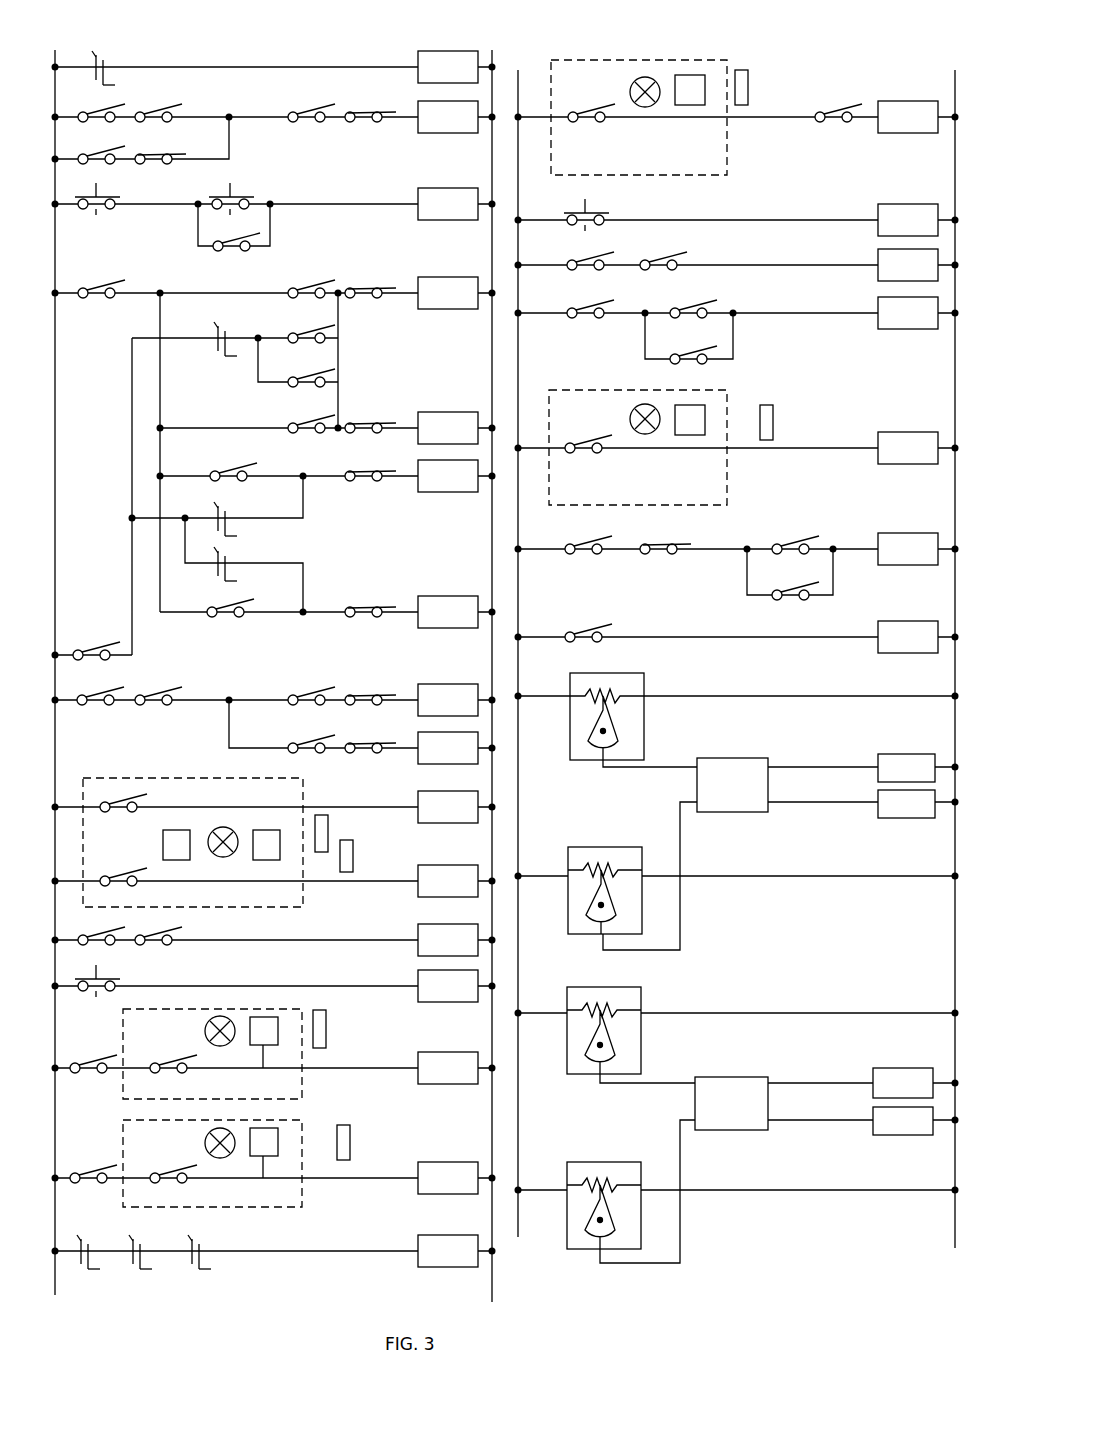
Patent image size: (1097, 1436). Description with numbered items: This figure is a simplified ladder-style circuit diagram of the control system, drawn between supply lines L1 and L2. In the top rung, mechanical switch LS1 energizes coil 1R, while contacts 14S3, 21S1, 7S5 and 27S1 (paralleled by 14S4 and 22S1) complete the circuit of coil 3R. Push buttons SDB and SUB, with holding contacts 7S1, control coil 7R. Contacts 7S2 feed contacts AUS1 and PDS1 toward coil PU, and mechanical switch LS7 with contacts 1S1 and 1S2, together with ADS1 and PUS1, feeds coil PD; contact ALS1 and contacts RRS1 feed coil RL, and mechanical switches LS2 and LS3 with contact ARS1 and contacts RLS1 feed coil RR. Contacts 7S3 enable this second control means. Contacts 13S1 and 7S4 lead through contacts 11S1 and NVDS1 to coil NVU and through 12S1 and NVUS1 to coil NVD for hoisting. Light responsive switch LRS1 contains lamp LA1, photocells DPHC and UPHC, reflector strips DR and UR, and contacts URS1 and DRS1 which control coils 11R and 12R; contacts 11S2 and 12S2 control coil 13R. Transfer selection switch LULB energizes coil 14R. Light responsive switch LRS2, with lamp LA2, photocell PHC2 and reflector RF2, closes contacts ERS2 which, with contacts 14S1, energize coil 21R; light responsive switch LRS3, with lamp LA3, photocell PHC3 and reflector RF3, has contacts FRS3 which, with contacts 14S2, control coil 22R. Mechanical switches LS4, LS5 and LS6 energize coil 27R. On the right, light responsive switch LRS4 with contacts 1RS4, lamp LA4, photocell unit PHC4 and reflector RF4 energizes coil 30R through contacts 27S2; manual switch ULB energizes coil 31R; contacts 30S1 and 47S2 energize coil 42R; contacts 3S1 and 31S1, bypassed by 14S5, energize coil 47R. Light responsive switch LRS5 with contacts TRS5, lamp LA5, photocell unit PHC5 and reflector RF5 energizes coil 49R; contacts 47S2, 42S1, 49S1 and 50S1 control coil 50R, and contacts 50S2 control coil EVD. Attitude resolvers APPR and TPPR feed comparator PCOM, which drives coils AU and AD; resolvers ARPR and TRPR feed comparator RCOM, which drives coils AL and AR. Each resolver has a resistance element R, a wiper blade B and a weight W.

The power supply line L1 is at (282, 660).
The power supply line L2 is at (717, 664).
The mechanical switch LS1 is at (103, 55).
The coil 1R is at (448, 67).
The contacts 14S3 is at (91, 104).
The contacts 21S1 is at (158, 98).
The contacts 7S5 is at (306, 98).
The contacts 27S1 is at (369, 98).
The coil 3R is at (448, 117).
The contacts 14S4 is at (91, 145).
The contacts 22S1 is at (160, 145).
The push button SUB is at (96, 186).
The push button SDB is at (212, 192).
The coil 7R is at (448, 204).
The contacts 7S1 is at (232, 254).
The contacts 7S2 is at (95, 277).
The contacts AUS1 is at (309, 275).
The contacts PDS1 is at (372, 275).
The coil PU is at (448, 293).
The mechanical switch LS7 is at (218, 328).
The contacts 1S1 is at (302, 323).
The contacts 1S2 is at (300, 366).
The contacts ADS1 is at (295, 412).
The contacts PUS1 is at (370, 409).
The coil PD is at (448, 428).
The contact ALS1 is at (216, 460).
The contacts RRS1 is at (360, 461).
The coil RL is at (448, 476).
The mechanical switch LS2 is at (216, 508).
The mechanical switch LS3 is at (226, 552).
The contact ARS1 is at (209, 596).
The contacts RLS1 is at (360, 596).
The coil RR is at (448, 612).
The contacts 7S3 is at (90, 641).
The contacts 13S1 is at (90, 686).
The contacts 7S4 is at (156, 684).
The contacts 11S1 is at (302, 684).
The contacts NVDS1 is at (367, 684).
The coil NVU is at (448, 700).
The contacts 12S1 is at (289, 733).
The contacts NVUS1 is at (367, 733).
The coil NVD is at (448, 748).
The light responsive switch LRS1 is at (228, 778).
The contacts URS1 is at (145, 794).
The coil 11R is at (448, 807).
The photocell DPHC is at (167, 834).
The lamp LA1 is at (213, 857).
The photocell UPHC is at (263, 834).
The reflector strip DR is at (328, 821).
The reflector strip UR is at (353, 858).
The contacts DRS1 is at (118, 865).
The coil 12R is at (448, 881).
The contacts 11S2 is at (91, 926).
The contacts 12S2 is at (175, 922).
The coil 13R is at (448, 940).
The transfer selection switch LULB is at (103, 972).
The coil 14R is at (448, 986).
The light responsive switch LRS2 is at (258, 1009).
The contacts 14S1 is at (86, 1055).
The contacts ERS2 is at (162, 1055).
The lamp LA2 is at (212, 1045).
The photocell PHC2 is at (256, 1056).
The reflector RF2 is at (326, 1023).
The coil 21R is at (448, 1068).
The light responsive switch LRS3 is at (280, 1120).
The contacts 14S2 is at (86, 1163).
The contacts FRS3 is at (162, 1163).
The lamp LA3 is at (212, 1157).
The photocell PHC3 is at (256, 1166).
The reflector RF3 is at (350, 1135).
The coil 22R is at (448, 1178).
The mechanical switch LS4 is at (78, 1239).
The mechanical switch LS5 is at (135, 1232).
The mechanical switch LS6 is at (195, 1232).
The coil 27R is at (448, 1251).
The light responsive switch LRS4 is at (617, 60).
The contacts 1RS4 is at (584, 101).
The lamp LA4 is at (636, 105).
The photocell unit PHC4 is at (688, 105).
The reflector RF4 is at (748, 85).
The contacts 27S2 is at (830, 101).
The coil 30R is at (908, 117).
The manual switch ULB is at (586, 193).
The coil 31R is at (908, 220).
The contacts 30S1 is at (571, 251).
The contacts 47S2 is at (609, 391).
The coil 42R is at (908, 265).
The contacts 3S1 is at (572, 297).
The contacts 31S1 is at (680, 296).
The contacts 14S5 is at (683, 346).
The coil 47R is at (908, 313).
The light responsive switch LRS5 is at (690, 390).
The contacts TRS5 is at (582, 432).
The lamp LA5 is at (636, 432).
The photocell unit PHC5 is at (688, 435).
The reflector RF5 is at (773, 420).
The coil 49R is at (908, 448).
The contacts 42S1 is at (662, 534).
The contacts 49S1 is at (784, 534).
The contacts 50S1 is at (785, 583).
The coil 50R is at (908, 549).
The contacts 50S2 is at (581, 620).
The coil EVD is at (908, 637).
The attitude resolver APPR is at (577, 673).
The comparator circuit PCOM is at (732, 785).
The coil AU is at (906, 768).
The coil AD is at (906, 804).
The attitude resolver TPPR is at (575, 847).
The attitude resolver ARPR is at (574, 987).
The comparator circuit RCOM is at (731, 1103).
The coil AL is at (903, 1083).
The coil AR is at (903, 1121).
The attitude resolver TRPR is at (574, 1162).
The resistance element R is at (603, 1190).
The wiper blade B is at (600, 1203).
The weight W is at (612, 1232).